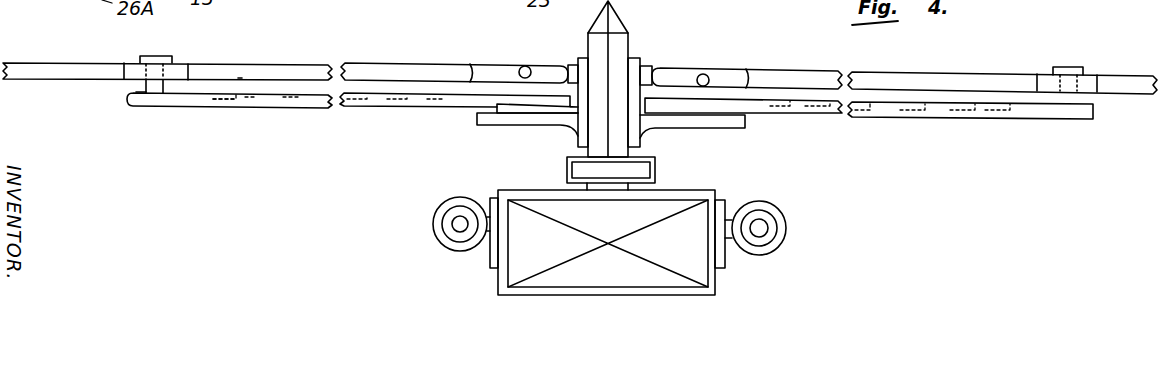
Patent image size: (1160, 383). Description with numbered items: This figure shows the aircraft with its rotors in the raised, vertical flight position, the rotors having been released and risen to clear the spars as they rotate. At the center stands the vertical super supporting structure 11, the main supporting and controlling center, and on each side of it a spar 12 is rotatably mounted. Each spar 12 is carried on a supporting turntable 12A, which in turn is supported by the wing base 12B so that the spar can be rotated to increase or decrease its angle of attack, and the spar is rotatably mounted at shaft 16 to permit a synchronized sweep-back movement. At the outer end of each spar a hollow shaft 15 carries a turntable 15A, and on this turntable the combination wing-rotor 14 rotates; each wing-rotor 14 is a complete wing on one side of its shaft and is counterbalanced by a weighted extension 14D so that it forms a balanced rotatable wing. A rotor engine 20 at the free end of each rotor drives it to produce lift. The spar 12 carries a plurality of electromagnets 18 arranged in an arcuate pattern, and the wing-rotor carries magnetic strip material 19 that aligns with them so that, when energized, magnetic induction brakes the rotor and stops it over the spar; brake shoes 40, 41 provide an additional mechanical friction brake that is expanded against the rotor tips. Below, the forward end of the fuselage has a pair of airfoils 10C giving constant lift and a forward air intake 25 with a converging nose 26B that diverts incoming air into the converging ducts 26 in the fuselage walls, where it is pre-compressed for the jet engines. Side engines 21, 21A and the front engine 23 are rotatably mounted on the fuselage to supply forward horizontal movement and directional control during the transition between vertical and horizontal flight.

The airfoil 10C is at (695, 190).
The super supporting structure 11 is at (633, 43).
The spar 12 is at (382, 106).
The supporting turntable 12A is at (510, 122).
The wing base 12B is at (643, 58).
The wing-rotor 14 is at (388, 62).
The weighted extension 14D is at (70, 61).
The hollow shaft 15 is at (146, 80).
The turntable 15A is at (137, 91).
The shaft 16 is at (490, 108).
The electromagnet 18 is at (230, 100).
The magnetic strip material 19 is at (240, 78).
The rotor engine 20 is at (741, 72).
The side engine 21 is at (786, 216).
The engine 21A is at (433, 220).
The front engine 23 is at (652, 168).
The forward air intake 25 is at (555, 280).
The duct 26 is at (525, 192).
The converging nose 26B is at (612, 245).
The brake shoe 40 is at (575, 62).
The brake shoe 41 is at (648, 67).